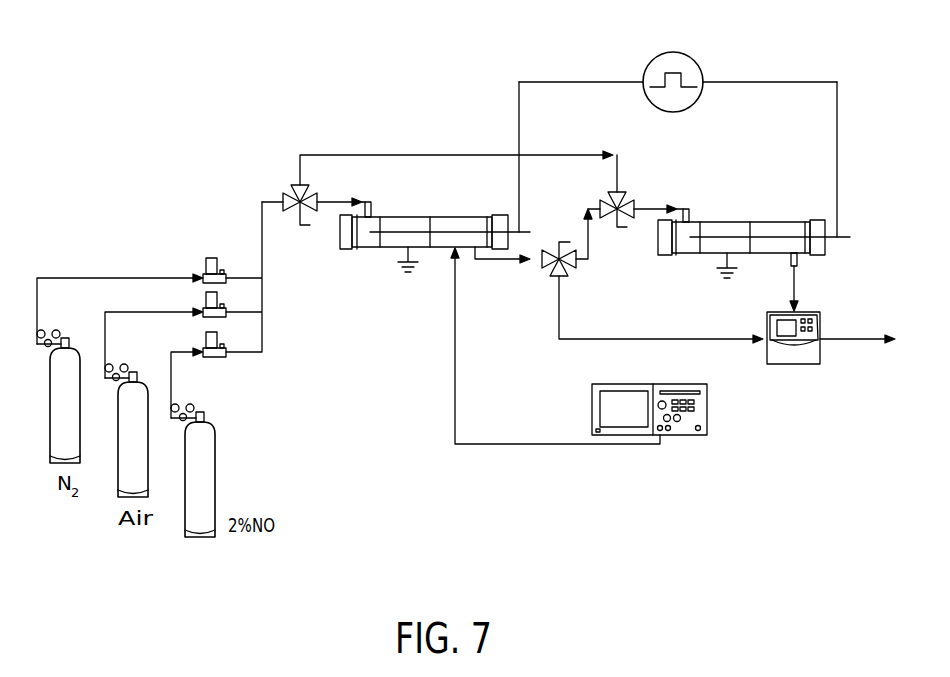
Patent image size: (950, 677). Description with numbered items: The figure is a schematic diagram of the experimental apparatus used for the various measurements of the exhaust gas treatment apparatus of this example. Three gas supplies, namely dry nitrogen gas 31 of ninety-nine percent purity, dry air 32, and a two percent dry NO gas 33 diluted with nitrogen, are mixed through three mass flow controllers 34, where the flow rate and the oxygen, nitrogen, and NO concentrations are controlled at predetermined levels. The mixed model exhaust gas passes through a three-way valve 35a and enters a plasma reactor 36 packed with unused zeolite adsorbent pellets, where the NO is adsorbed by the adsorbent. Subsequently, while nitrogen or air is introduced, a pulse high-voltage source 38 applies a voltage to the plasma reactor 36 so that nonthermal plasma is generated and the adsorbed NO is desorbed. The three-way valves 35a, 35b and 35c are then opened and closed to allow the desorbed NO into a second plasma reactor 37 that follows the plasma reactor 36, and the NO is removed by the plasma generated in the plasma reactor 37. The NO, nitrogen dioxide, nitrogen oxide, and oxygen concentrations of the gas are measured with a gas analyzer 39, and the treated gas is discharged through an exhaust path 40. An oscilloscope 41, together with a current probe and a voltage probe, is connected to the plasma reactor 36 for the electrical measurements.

The dry nitrogen gas 31 is at (53, 440).
The dry air 32 is at (122, 472).
The dry NO gas 33 is at (190, 512).
The mass flow controllers 34 is at (220, 284).
The three-way valve 35a is at (293, 193).
The three-way valve 35b is at (628, 197).
The three-way valve 35c is at (572, 272).
The plasma reactor 36 is at (373, 250).
The plasma reactor 37 is at (775, 216).
The pulse high-voltage source 38 is at (690, 62).
The gas analyzer 39 is at (813, 313).
The exhaust path 40 is at (862, 341).
The oscilloscope 41 is at (592, 405).